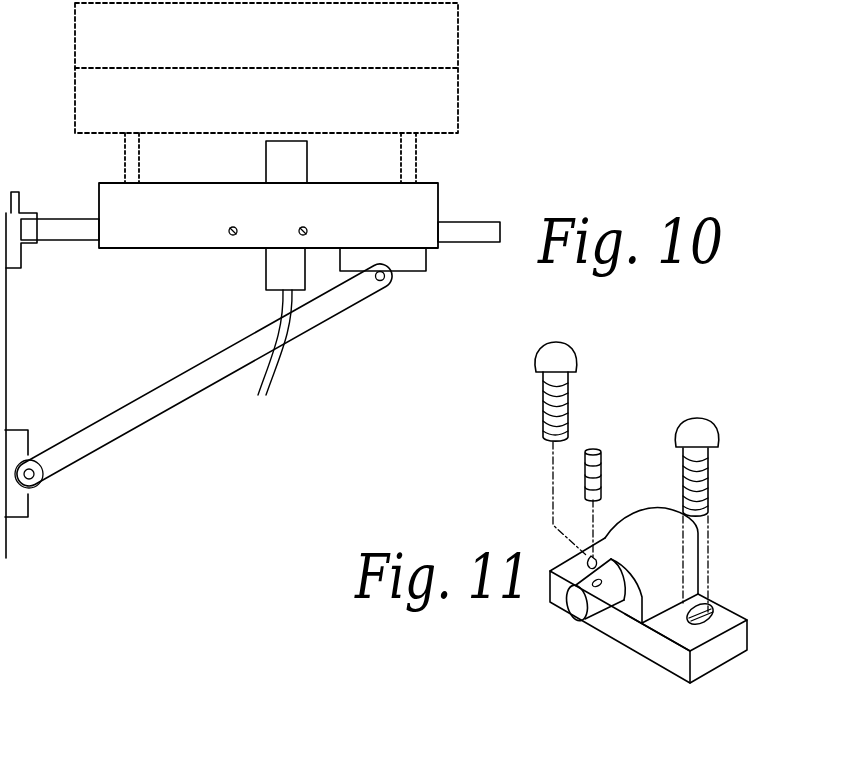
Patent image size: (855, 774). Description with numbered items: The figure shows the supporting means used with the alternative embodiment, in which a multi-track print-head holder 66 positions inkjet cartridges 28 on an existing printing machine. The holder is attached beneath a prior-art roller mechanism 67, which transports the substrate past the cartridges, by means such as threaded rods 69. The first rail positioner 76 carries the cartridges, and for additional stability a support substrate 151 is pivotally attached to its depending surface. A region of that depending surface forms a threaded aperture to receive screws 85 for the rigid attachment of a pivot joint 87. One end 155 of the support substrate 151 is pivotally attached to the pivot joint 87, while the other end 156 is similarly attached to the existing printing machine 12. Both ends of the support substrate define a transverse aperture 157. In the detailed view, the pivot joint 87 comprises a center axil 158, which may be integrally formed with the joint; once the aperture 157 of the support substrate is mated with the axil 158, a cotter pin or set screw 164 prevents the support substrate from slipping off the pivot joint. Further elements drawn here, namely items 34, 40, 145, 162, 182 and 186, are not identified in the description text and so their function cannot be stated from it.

In FIG. 10, the supporting structure 12 is at (6, 357).
In FIG. 10, the inkjet cartridge 28 is at (265, 270).
In FIG. 10, the rod 34 is at (66, 233).
In FIG. 10, the mounting bracket 40 is at (32, 200).
In FIG. 10, the multi-track print-head holder 66 is at (313, 411).
In FIG. 10, the roller mechanism 67 is at (490, 70).
In FIG. 11, the roller mechanism 67 is at (304, 763).
In FIG. 10, the threaded rod 69 is at (140, 160).
In FIG. 10, the first rail positioner 76 is at (430, 198).
In FIG. 11, the screw 85 is at (710, 430).
In FIG. 10, the pivot joint 87 is at (430, 266).
In FIG. 11, the pivot joint 87 is at (720, 668).
In FIG. 10, the hole 145 is at (343, 372).
In FIG. 11, the hole 145 is at (702, 612).
In FIG. 10, the support substrate 151 is at (213, 380).
In FIG. 10, the one end of support substrate 155 is at (385, 290).
In FIG. 10, the other end of support substrate 156 is at (90, 457).
In FIG. 10, the transverse aperture 157 is at (390, 285).
In FIG. 11, the center axil 158 is at (613, 593).
In FIG. 11, the cylinder 162 is at (568, 594).
In FIG. 11, the cotter pin or set screw 164 is at (583, 457).
In FIG. 11, the element 182 is at (430, 773).
In FIG. 11, the element 186 is at (516, 766).